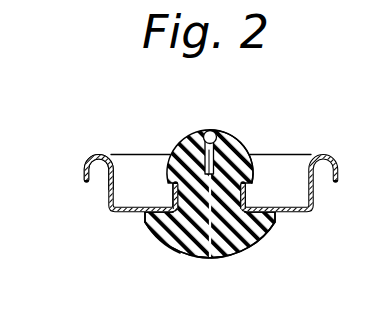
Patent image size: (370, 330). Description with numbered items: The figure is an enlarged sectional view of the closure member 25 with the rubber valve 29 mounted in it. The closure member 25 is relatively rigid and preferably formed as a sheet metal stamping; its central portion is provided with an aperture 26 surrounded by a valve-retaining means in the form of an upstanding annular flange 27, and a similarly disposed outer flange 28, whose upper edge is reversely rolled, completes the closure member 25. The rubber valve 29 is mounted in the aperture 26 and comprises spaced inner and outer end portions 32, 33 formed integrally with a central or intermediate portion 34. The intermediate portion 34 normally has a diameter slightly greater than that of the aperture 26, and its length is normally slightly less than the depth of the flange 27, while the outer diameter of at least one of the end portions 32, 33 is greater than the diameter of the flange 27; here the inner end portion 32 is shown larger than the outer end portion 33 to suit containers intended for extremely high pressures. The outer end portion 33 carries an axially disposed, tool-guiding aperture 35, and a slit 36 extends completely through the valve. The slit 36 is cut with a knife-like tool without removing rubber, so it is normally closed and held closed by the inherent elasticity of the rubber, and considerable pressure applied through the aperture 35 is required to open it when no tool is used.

The closure member 25 is at (112, 213).
The aperture 26 is at (173, 187).
The upstanding annular flange 27 is at (247, 195).
The outer flange 28 is at (106, 181).
The rubber valve 29 is at (174, 149).
The inner end portion 32 is at (227, 258).
The outer end portion 33 is at (248, 147).
The intermediate portion 34 is at (172, 248).
The tool-guiding aperture 35 is at (212, 130).
The slit 36 is at (190, 257).